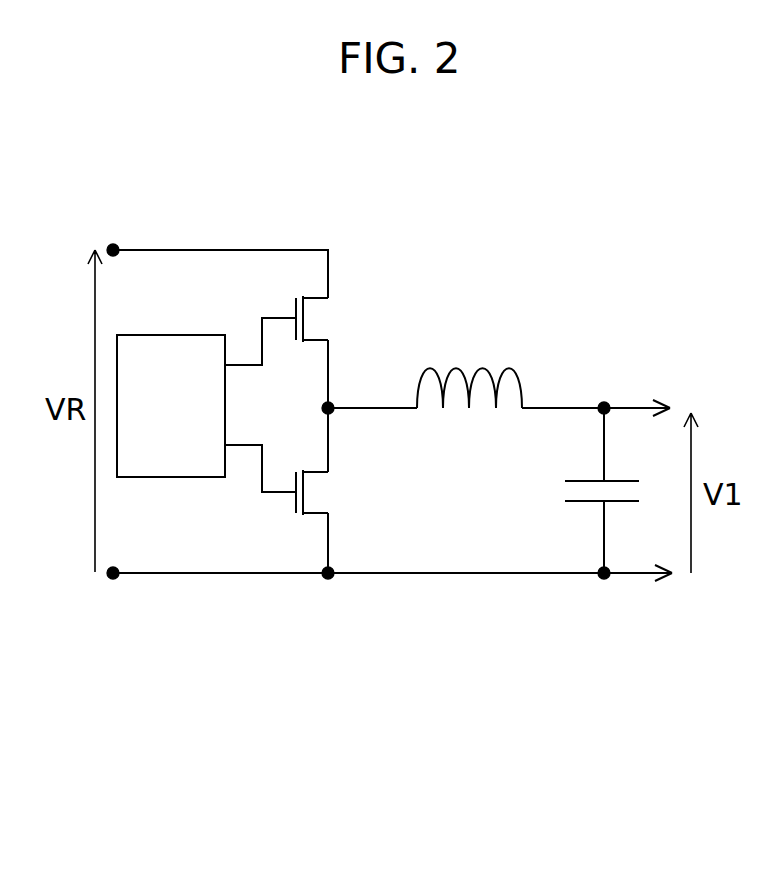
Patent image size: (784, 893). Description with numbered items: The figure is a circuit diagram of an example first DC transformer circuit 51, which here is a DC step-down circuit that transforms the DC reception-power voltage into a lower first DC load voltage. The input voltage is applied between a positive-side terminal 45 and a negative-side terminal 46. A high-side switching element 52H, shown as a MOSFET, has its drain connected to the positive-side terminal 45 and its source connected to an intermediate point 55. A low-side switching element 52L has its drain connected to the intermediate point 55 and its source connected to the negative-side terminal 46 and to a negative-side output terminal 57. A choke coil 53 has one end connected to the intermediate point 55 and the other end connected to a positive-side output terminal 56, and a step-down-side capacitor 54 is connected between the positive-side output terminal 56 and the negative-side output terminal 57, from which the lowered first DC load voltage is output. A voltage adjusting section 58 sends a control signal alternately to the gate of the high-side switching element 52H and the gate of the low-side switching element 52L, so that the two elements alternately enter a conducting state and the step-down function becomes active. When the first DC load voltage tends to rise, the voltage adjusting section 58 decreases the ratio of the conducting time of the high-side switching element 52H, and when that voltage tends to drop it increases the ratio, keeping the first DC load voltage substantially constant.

The positive-side terminal 45 is at (118, 246).
The negative-side terminal 46 is at (117, 578).
The first DC transformer circuit 51 is at (544, 226).
The high-side switching element 52H is at (362, 308).
The low-side switching element 52L is at (339, 497).
The choke coil 53 is at (483, 370).
The step-down-side capacitor 54 is at (588, 481).
The intermediate point 55 is at (322, 408).
The positive-side output terminal 56 is at (607, 401).
The negative-side output terminal 57 is at (605, 580).
The voltage adjusting section 58 is at (195, 427).